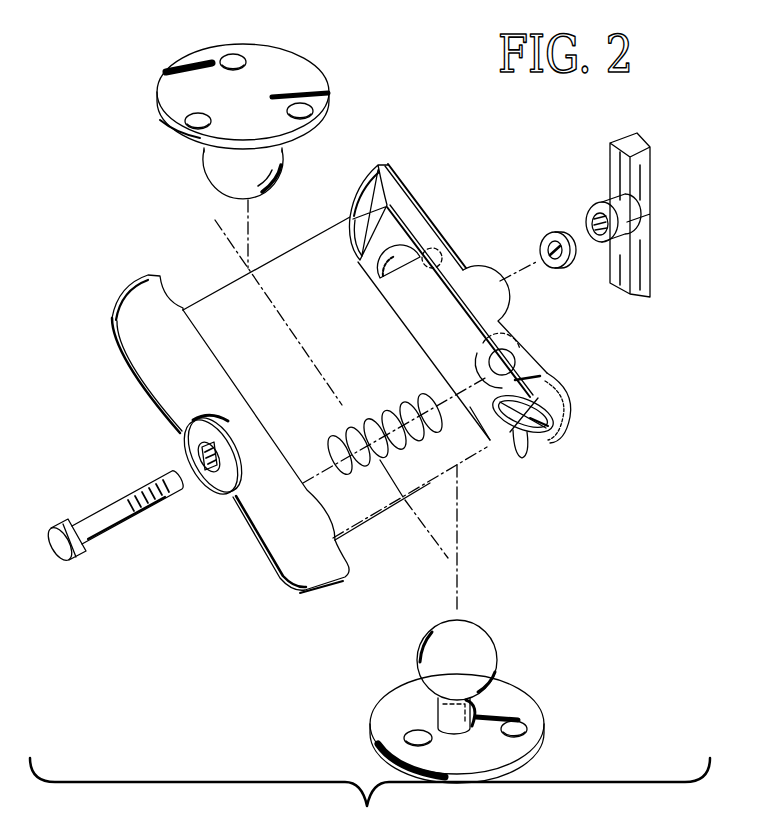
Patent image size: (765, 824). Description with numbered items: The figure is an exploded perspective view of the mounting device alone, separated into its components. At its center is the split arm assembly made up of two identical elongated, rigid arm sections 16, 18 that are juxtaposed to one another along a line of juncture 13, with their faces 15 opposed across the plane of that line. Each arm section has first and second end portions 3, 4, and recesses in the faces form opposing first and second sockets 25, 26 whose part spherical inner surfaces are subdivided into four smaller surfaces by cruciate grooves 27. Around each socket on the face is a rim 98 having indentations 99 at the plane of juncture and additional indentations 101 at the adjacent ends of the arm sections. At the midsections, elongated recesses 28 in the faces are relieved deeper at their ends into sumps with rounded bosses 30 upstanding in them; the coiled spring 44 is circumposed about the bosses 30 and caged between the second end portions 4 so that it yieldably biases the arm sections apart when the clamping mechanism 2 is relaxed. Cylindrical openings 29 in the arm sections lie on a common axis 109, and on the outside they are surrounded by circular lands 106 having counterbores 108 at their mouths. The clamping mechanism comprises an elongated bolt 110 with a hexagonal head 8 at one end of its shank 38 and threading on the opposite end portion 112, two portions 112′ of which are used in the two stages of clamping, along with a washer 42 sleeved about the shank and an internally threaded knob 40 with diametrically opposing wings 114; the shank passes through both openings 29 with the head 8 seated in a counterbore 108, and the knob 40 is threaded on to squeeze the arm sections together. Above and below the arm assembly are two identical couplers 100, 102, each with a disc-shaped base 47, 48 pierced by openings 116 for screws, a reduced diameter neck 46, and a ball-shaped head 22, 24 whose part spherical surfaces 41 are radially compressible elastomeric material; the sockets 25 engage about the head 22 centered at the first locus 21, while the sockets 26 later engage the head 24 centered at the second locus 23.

The clamping mechanism 2 is at (636, 209).
The first end portions 3 is at (415, 190).
The second end portions 4 is at (288, 585).
The hexagonal head 8 is at (115, 522).
The line of juncture 13 is at (458, 556).
The faces 15 is at (432, 351).
The arm section 16 is at (188, 367).
The arm section 18 is at (541, 376).
The first locus 21 is at (250, 270).
The head 22 is at (203, 180).
The second locus 23 is at (447, 717).
The head 24 is at (478, 657).
The first sockets 25 is at (353, 187).
The second sockets 26 is at (551, 446).
The cruciate grooves 27 is at (523, 450).
The recesses 28 is at (417, 308).
The cylindrical openings 29 is at (223, 450).
The rounded bosses 30 is at (523, 343).
The shank 38 is at (135, 522).
The knob 40 is at (645, 270).
The part spherical surfaces 41 is at (206, 160).
The washer 42 is at (555, 232).
The coiled spring 44 is at (350, 437).
The neck 46 is at (473, 703).
The base 47 is at (300, 68).
The base 48 is at (387, 715).
The rims 98 is at (487, 427).
The indentations 99 is at (345, 540).
The coupler 100 is at (231, 127).
The indentations 101 is at (537, 447).
The coupler 102 is at (442, 680).
The circular lands 106 is at (223, 487).
The counterbores 108 is at (187, 486).
The axis 109 is at (525, 268).
The bolt 110 is at (94, 504).
The threaded end portion 112 is at (128, 480).
The threading portion 112′ is at (178, 492).
The wings 114 is at (617, 162).
The openings 116 is at (236, 55).